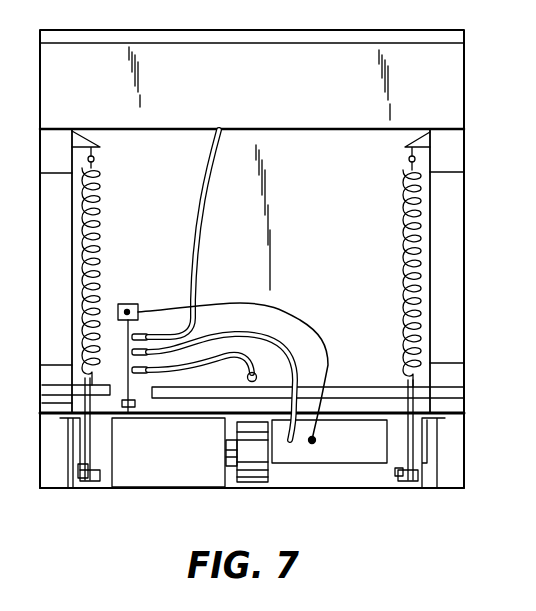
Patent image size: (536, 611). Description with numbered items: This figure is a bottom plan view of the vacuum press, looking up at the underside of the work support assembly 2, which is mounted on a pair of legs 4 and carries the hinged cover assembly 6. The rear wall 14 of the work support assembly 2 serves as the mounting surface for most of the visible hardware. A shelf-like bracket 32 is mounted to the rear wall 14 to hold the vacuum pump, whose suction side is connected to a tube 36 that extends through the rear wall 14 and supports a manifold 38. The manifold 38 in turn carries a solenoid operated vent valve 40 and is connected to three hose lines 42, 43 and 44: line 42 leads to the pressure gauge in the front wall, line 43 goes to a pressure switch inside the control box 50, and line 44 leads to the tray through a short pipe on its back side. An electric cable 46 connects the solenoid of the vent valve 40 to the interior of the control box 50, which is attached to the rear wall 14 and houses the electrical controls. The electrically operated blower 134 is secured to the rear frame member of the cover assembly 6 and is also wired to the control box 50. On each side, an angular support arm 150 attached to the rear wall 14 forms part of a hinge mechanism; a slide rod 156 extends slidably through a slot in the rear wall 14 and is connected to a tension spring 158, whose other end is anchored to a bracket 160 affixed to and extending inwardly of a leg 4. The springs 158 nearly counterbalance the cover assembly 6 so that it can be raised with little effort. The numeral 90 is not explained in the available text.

The work support assembly 2 is at (4, 538).
The legs 4 is at (52, 204).
The hinged cover assembly 6 is at (0, 144).
The rear wall 14 is at (56, 410).
The shelf-like bracket 32 is at (162, 469).
The tube 36 is at (144, 414).
The manifold 38 is at (124, 342).
The solenoid operated vent valve 40 is at (124, 304).
The hose line 42 is at (242, 359).
The hose line 43 is at (292, 343).
The hose line 44 is at (198, 257).
The electric cable 46 is at (297, 326).
The control box 50 is at (348, 450).
The base 90 is at (305, 477).
The blower 134 is at (255, 483).
The angular support arm 150 is at (420, 437).
The slide rod 156 is at (95, 443).
The tension spring 158 is at (100, 190).
The brackets 160 is at (100, 148).